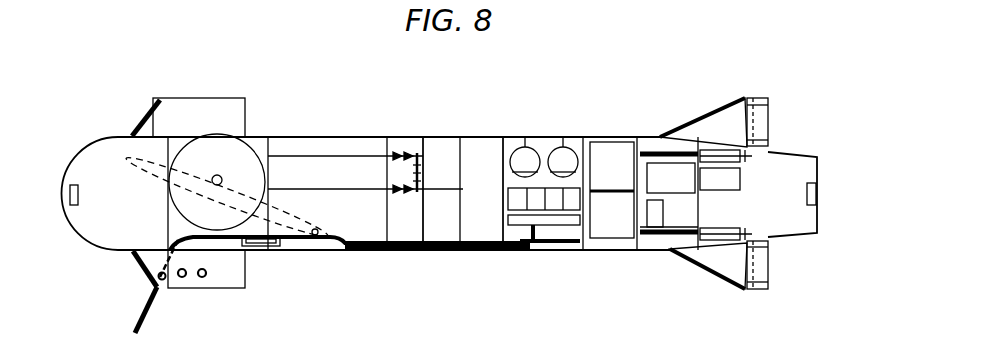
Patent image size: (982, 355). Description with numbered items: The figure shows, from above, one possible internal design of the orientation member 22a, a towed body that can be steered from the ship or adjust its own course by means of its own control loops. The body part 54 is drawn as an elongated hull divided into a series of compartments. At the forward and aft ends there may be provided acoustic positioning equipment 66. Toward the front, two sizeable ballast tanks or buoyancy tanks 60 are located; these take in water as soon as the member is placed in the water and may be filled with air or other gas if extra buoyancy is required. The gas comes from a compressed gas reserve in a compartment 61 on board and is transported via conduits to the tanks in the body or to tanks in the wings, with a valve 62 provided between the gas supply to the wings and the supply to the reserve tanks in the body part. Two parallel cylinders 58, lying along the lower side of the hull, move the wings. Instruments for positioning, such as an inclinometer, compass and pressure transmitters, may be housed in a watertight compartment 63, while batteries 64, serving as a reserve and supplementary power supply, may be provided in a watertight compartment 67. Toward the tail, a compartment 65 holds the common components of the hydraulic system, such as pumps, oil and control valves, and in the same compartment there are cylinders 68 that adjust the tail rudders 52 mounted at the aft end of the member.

The orientation member 22a is at (285, 103).
The tail rudders 52 is at (768, 122).
The body part 54 is at (423, 250).
The parallel cylinders 58 is at (265, 247).
The ballast tanks or buoyancy tanks 60 is at (105, 157).
The compartment 61 is at (480, 148).
The valve 62 is at (405, 189).
The watertight compartment 63 is at (540, 143).
The batteries 64 is at (618, 160).
The compartment 65 is at (667, 175).
The acoustic positioning equipment 66 is at (80, 195).
The watertight compartment 67 is at (578, 135).
The cylinders 68 is at (712, 233).